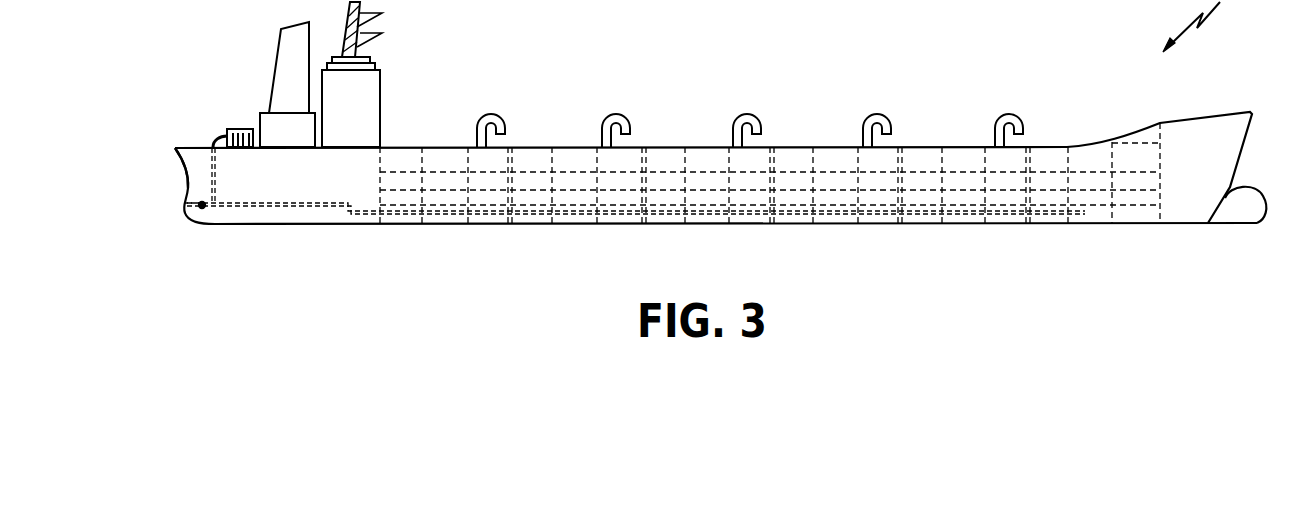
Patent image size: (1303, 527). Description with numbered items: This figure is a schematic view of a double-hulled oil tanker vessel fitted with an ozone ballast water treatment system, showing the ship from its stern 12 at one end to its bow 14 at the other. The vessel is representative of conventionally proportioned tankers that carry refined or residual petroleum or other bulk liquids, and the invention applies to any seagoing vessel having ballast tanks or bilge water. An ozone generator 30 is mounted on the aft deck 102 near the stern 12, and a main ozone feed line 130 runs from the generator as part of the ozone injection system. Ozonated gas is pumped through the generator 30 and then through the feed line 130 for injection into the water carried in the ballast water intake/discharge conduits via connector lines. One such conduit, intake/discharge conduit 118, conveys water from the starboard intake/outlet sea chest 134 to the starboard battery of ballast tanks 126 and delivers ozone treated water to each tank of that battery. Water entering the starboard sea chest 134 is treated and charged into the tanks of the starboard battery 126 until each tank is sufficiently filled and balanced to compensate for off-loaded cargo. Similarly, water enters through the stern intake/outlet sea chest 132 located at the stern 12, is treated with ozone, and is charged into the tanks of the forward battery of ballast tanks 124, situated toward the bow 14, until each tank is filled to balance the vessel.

The stern 12 is at (177, 166).
The bow 14 is at (1253, 133).
The ozone generator 30 is at (242, 129).
The aft deck 102 is at (182, 147).
The intake/discharge conduit 118 is at (277, 208).
The forward battery of ballast tanks 124 is at (833, 155).
The starboard battery of ballast tanks 126 is at (445, 162).
The main ozone feed line 130 is at (213, 170).
The stern intake/outlet sea chest 132 is at (186, 205).
The starboard intake/outlet sea chest 134 is at (202, 208).